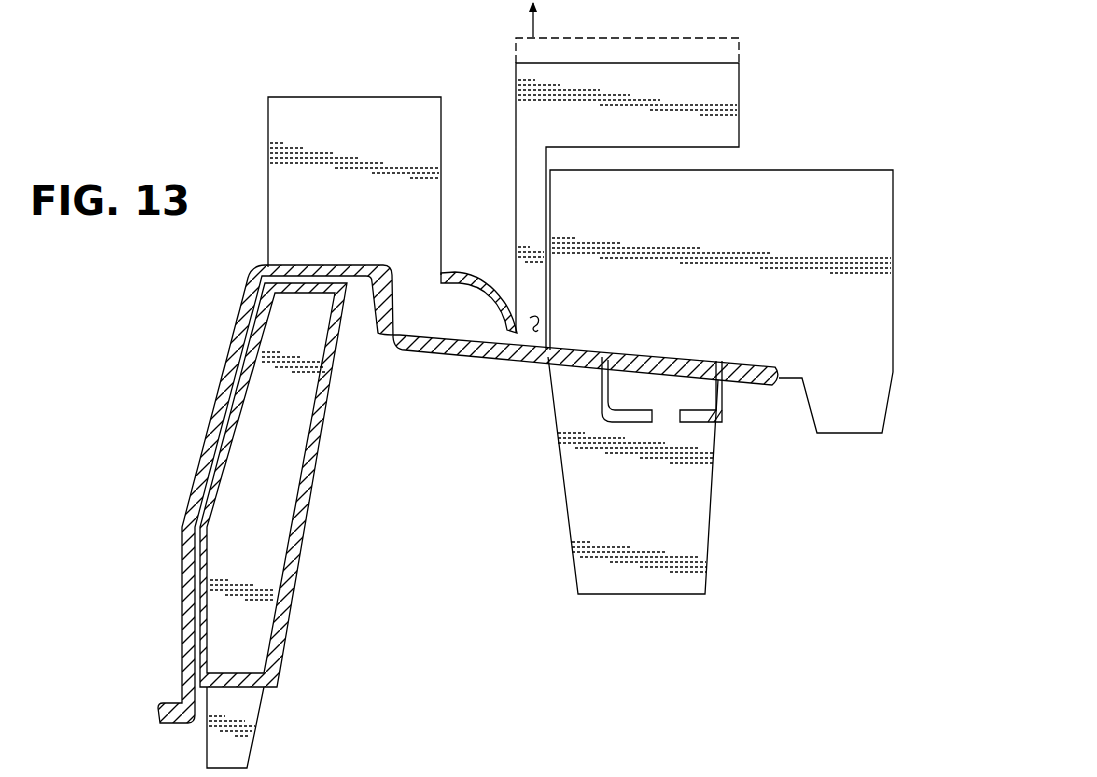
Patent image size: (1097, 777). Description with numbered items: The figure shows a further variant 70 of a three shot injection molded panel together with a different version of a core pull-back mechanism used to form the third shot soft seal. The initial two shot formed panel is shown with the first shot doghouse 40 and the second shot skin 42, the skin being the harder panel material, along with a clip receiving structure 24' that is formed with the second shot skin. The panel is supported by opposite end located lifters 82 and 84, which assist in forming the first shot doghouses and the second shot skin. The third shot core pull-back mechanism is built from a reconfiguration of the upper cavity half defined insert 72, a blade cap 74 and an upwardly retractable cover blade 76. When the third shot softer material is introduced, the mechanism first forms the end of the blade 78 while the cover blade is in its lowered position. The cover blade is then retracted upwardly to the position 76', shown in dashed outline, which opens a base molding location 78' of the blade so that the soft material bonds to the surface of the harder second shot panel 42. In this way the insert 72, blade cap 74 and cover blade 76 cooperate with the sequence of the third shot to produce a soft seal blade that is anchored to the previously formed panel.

The variant of three shot injection molded panel 70 is at (194, 108).
The upper cavity half defined insert 72 is at (340, 112).
The blade cap 74 is at (688, 289).
The upwardly retractable cover blade 76 is at (627, 175).
The retracted position of cover blade 76' is at (654, 31).
The end of the blade 78 is at (479, 266).
The base molding location of the blade 78' is at (515, 387).
The clip receiving structure 24' is at (691, 426).
The first shot doghouse 40 is at (310, 520).
The second shot skin 42 is at (222, 387).
The lifter 82 is at (248, 612).
The lifter 84 is at (583, 512).